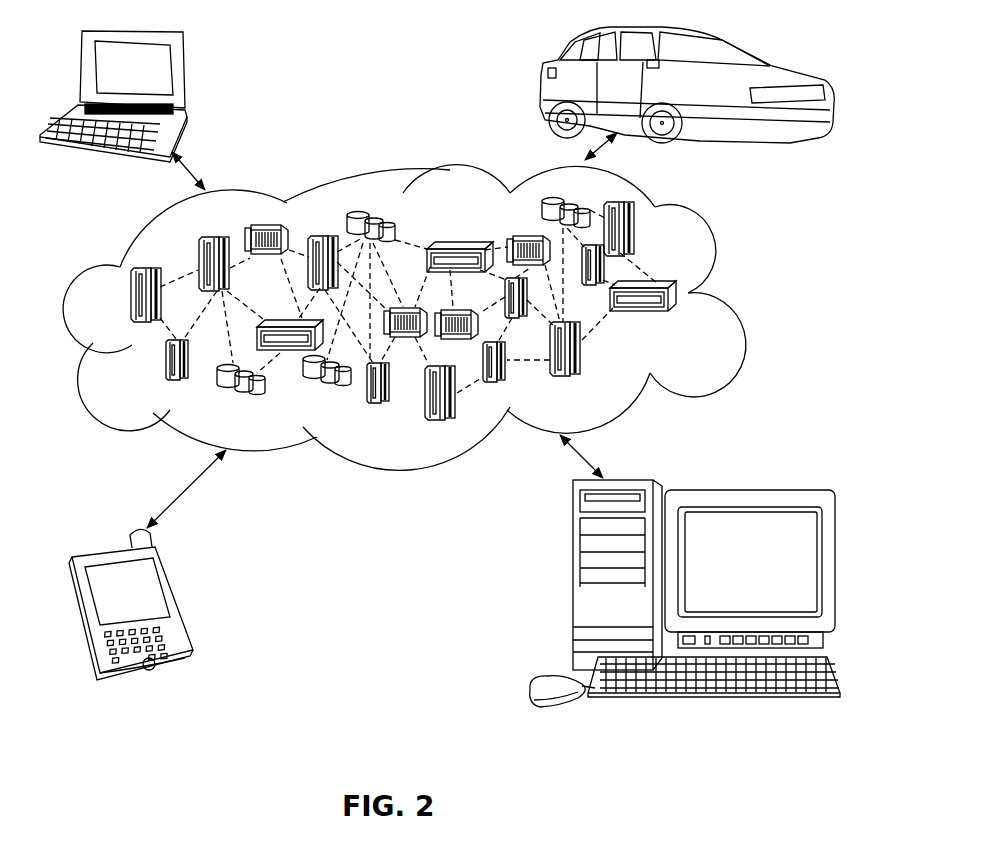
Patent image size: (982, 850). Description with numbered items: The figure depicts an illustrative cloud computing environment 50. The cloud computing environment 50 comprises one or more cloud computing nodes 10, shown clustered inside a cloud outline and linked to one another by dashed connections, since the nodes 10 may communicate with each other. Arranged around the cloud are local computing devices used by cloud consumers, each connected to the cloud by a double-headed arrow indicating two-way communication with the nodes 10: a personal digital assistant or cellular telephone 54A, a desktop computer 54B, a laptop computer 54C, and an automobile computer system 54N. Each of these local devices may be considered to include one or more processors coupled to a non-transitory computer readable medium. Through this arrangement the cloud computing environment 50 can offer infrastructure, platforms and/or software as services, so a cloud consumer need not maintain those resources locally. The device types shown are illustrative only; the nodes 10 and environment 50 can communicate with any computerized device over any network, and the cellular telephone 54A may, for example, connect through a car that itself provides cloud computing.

The cloud computing nodes 10 is at (700, 317).
The cloud computing environment 50 is at (717, 262).
The personal digital assistant or cellular telephone 54A is at (178, 602).
The desktop computer 54B is at (572, 582).
The laptop computer 54C is at (186, 72).
The automobile computer system 54N is at (545, 80).